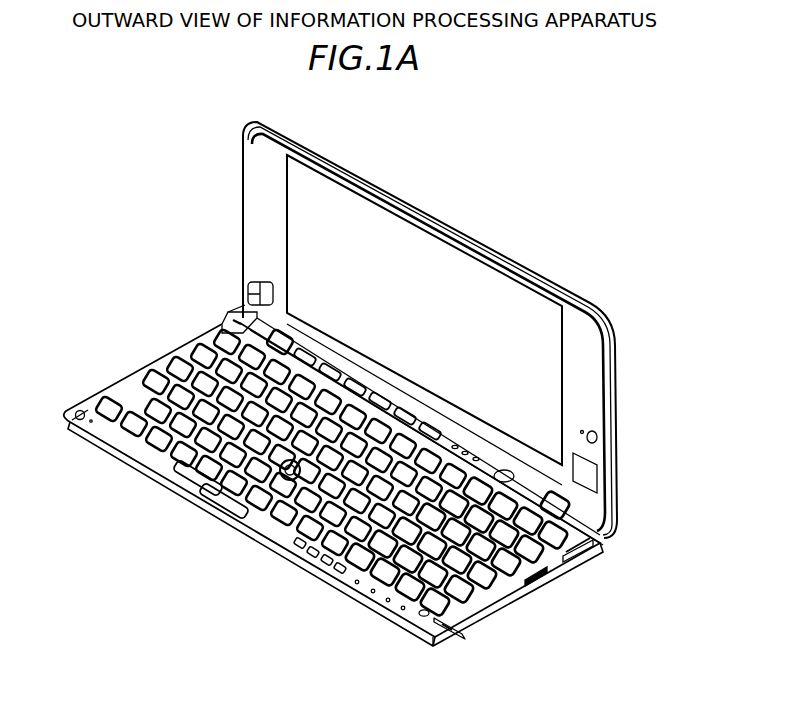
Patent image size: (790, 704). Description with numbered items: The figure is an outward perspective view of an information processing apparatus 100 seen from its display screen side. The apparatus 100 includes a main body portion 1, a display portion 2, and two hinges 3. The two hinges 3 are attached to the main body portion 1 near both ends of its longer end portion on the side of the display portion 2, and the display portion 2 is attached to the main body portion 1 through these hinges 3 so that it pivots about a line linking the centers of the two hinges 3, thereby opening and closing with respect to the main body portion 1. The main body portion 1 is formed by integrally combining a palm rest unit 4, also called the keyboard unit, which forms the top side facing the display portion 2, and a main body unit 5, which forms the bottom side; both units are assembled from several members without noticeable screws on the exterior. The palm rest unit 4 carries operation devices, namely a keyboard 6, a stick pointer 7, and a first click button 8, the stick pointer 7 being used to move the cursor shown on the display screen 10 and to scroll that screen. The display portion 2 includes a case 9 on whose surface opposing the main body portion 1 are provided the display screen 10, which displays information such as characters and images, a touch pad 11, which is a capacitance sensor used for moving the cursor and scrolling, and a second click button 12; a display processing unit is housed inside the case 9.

The information processing apparatus 100 is at (181, 141).
The main body portion 1 is at (517, 637).
The display portion 2 is at (233, 192).
The hinge 3 is at (243, 326).
The palm rest unit 4 is at (462, 612).
The main body unit 5 is at (446, 647).
The keyboard 6 is at (540, 568).
The stick pointer 7 is at (283, 481).
The first click button 8 is at (205, 504).
The case 9 is at (583, 364).
The display screen 10 is at (528, 306).
The touch pad 11 is at (590, 470).
The second click button 12 is at (250, 289).